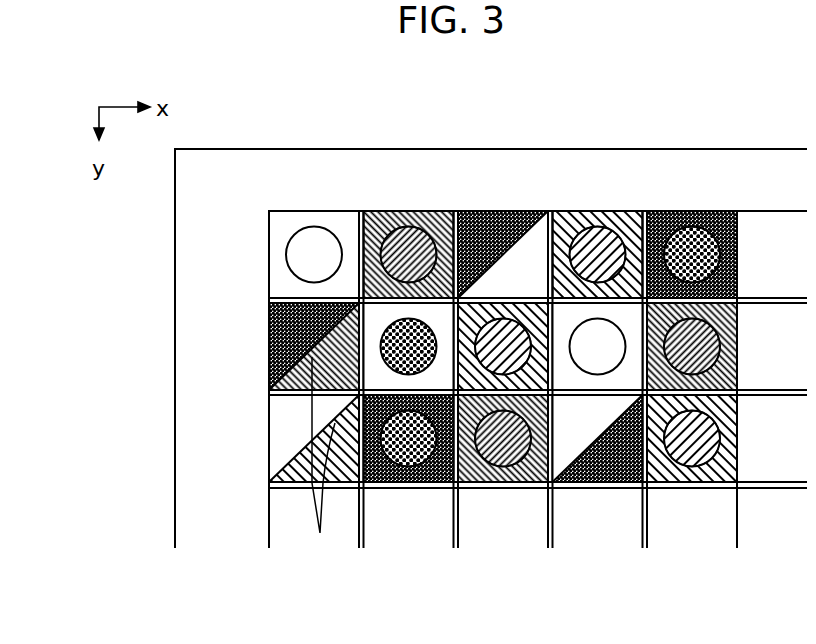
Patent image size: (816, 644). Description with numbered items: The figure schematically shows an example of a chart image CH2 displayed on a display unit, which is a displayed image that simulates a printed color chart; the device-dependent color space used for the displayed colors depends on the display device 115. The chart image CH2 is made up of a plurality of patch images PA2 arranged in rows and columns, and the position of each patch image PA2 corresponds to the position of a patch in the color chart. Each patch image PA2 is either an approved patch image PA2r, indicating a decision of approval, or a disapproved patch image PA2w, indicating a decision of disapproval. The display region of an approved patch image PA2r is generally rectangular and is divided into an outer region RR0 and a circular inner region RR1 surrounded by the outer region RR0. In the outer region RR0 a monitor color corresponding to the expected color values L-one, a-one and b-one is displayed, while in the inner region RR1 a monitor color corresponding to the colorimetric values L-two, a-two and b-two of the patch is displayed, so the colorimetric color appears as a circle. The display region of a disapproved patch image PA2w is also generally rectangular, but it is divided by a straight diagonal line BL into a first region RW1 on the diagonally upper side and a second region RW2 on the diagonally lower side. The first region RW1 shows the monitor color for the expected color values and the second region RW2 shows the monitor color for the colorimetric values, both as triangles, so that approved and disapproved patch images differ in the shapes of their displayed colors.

The display device 115 is at (257, 132).
The approved patch image PA2r is at (397, 197).
The disapproved patch image PA2w is at (495, 197).
The patch image PA2 is at (523, 197).
The chart image CH2 is at (663, 197).
The outer region RR0 is at (287, 222).
The inner region RR1 is at (302, 258).
The first region RW1 is at (302, 407).
The second region RW2 is at (303, 473).
The straight diagonal line BL is at (320, 463).